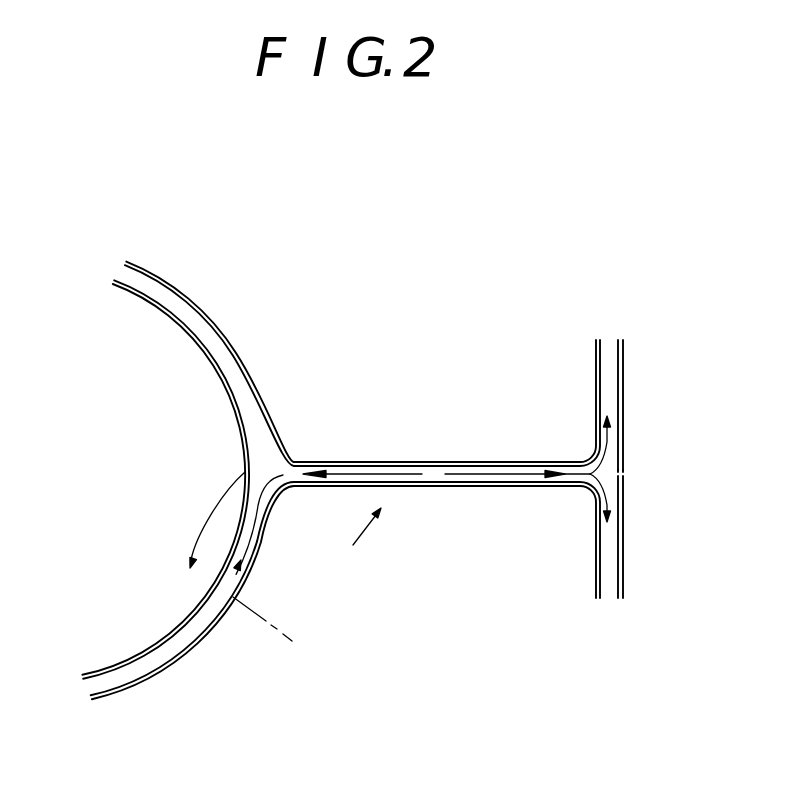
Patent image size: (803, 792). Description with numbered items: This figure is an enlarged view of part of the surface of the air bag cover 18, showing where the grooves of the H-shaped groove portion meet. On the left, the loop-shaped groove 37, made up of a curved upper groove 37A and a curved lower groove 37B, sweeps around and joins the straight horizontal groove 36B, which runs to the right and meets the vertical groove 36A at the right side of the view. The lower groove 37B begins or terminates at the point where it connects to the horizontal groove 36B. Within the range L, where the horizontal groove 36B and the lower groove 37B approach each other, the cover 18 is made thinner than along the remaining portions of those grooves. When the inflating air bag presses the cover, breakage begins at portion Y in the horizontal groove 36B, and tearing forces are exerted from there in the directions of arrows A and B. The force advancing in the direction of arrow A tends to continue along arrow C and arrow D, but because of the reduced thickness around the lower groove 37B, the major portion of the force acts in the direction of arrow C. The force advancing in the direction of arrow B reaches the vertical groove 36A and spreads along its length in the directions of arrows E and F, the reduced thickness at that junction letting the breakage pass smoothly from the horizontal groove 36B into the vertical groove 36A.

The air bag cover 18 is at (409, 320).
The loop-shaped groove 37 is at (202, 488).
The upper groove 37A is at (198, 328).
The lower groove 37B is at (150, 650).
The vertical groove 36A is at (611, 367).
The horizontal groove 36B is at (500, 487).
The arrow A is at (348, 470).
The portion Y is at (433, 465).
The arrow B is at (521, 470).
The arrow C is at (255, 545).
The arrow D is at (203, 518).
The arrow E is at (606, 440).
The arrow F is at (608, 493).
The range L is at (294, 630).